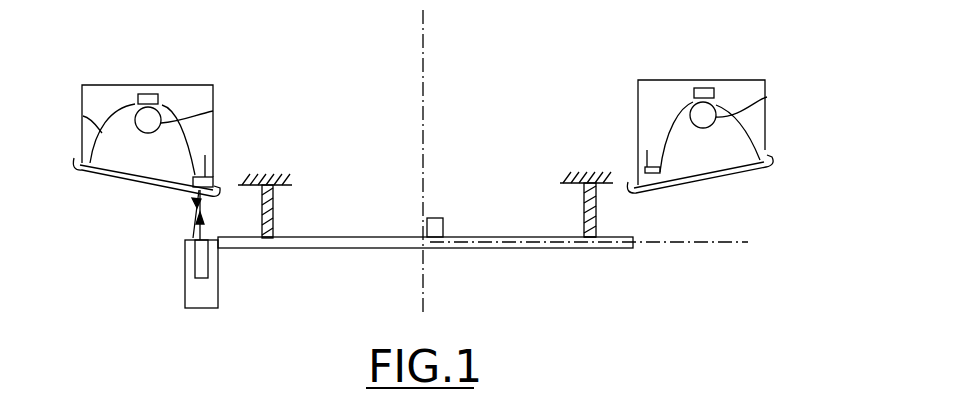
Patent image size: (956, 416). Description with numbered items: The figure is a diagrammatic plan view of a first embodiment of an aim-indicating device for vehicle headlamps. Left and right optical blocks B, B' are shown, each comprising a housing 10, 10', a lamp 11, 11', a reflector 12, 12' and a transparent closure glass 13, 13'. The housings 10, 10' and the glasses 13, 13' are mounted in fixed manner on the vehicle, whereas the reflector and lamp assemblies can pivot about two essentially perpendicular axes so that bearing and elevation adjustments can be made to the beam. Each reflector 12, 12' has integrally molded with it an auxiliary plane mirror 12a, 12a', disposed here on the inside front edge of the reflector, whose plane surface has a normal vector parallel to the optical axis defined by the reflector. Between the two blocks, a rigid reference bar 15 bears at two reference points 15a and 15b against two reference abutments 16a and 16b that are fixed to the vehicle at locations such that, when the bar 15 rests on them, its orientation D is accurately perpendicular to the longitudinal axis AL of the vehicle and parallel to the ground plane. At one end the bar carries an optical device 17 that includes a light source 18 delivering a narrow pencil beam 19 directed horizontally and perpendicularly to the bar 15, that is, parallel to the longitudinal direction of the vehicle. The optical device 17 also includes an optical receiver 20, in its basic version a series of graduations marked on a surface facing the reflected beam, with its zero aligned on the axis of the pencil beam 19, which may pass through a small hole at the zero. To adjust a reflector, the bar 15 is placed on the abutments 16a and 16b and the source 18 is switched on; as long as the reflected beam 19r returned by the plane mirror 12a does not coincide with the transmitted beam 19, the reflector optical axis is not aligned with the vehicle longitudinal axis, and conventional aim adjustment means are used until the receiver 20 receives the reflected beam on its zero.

The left optical block B is at (131, 88).
The right optical block B' is at (715, 94).
The housing 10 is at (148, 100).
The lamp 11 is at (200, 98).
The reflector 12 is at (115, 123).
The auxiliary plane mirror 12a is at (240, 145).
The transparent closure glass 13 is at (117, 177).
The housing 10' is at (668, 114).
The lamp 11' is at (758, 105).
The reflector 12' is at (701, 99).
The auxiliary plane mirror 12a' is at (617, 138).
The transparent closure glass 13' is at (727, 181).
The rigid reference bar 15 is at (395, 245).
The reference point 15a is at (275, 238).
The reference point 15b is at (583, 234).
The reference abutment 16a is at (275, 193).
The reference abutment 16b is at (560, 182).
The optical device 17 is at (188, 317).
The light source 18 is at (200, 265).
The transmitted pencil beam 19 is at (203, 228).
The reflected beam 19r is at (193, 215).
The optical receiver 20 is at (187, 240).
The longitudinal axis AL is at (423, 70).
The orientation of the bar D is at (728, 241).